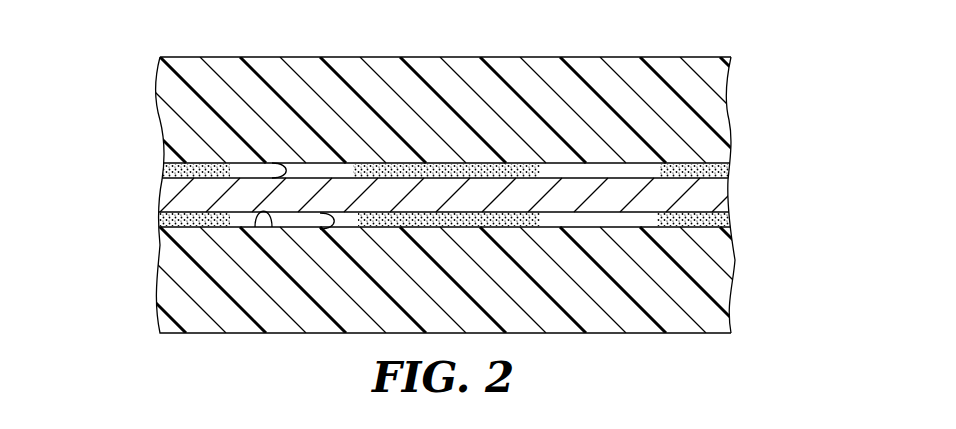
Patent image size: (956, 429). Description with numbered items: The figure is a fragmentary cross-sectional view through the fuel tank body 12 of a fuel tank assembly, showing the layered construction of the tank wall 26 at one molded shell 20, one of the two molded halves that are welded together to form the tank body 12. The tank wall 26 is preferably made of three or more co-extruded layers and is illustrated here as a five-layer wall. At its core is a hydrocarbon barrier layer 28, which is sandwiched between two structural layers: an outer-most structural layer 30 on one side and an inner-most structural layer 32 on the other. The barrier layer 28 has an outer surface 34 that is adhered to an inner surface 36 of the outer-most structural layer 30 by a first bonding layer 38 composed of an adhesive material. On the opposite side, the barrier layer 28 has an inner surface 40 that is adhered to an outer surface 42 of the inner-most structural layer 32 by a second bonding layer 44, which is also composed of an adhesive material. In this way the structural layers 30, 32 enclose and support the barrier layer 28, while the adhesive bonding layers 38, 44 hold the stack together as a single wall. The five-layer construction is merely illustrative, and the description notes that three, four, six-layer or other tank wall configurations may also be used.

The fuel tank body 12 is at (146, 72).
The molded shell 20 is at (622, 66).
The tank wall 26 is at (735, 55).
The hydrocarbon barrier layer 28 is at (722, 198).
The outer-most structural layer 30 is at (358, 60).
The inner-most structural layer 32 is at (718, 303).
The outer surface 34 is at (576, 179).
The inner surface 36 is at (272, 179).
The first bonding layer 38 is at (160, 171).
The inner surface 40 is at (320, 229).
The outer surface 42 is at (272, 227).
The second bonding layer 44 is at (160, 221).